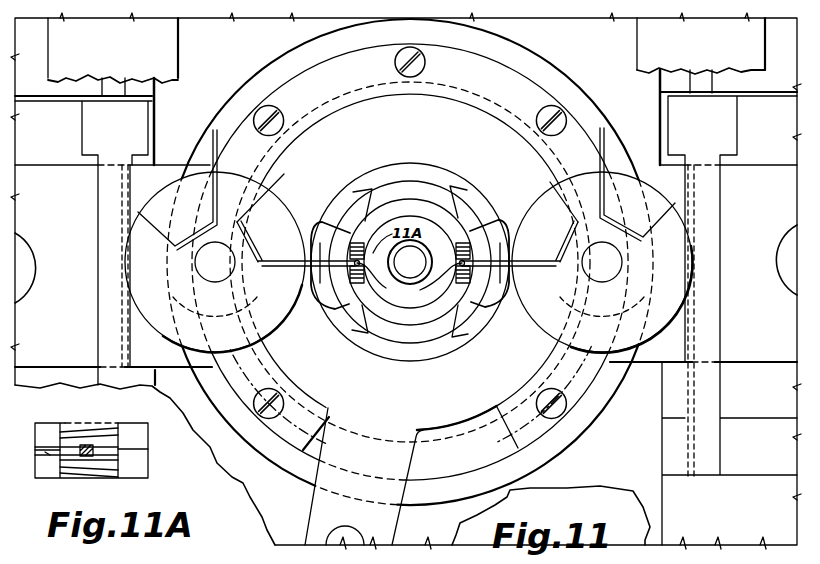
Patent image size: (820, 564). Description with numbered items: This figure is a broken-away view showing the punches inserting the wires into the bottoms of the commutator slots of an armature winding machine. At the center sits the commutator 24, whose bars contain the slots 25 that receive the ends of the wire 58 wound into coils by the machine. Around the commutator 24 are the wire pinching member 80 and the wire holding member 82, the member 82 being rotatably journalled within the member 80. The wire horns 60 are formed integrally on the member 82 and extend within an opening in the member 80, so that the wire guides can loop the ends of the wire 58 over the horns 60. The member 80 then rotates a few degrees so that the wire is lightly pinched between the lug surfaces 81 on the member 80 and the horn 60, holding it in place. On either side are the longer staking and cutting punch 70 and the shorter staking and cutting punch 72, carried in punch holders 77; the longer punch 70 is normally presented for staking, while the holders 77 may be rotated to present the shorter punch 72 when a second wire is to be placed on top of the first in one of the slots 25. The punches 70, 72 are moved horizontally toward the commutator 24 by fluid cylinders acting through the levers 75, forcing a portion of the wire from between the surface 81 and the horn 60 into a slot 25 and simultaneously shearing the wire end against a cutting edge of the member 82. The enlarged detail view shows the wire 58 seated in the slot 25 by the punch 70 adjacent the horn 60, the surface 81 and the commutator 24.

In FIG. 11, the commutator 24 is at (425, 320).
In FIG. 11A, the commutator 24 is at (110, 461).
In FIG. 11, the slots 25 is at (463, 237).
In FIG. 11A, the slots 25 is at (122, 443).
In FIG. 11, the wire 58 is at (420, 281).
In FIG. 11A, the wire 58 is at (88, 447).
In FIG. 11, the wire horns 60 is at (320, 243).
In FIG. 11A, the wire horns 60 is at (56, 426).
In FIG. 11, the longer staking and cutting punch 70 is at (292, 270).
In FIG. 11A, the longer staking and cutting punch 70 is at (43, 443).
In FIG. 11, the shorter staking and cutting punch 72 is at (217, 137).
In FIG. 11, the levers 75 is at (30, 262).
In FIG. 11, the punch holders 77 is at (548, 320).
In FIG. 11, the wire pinching member 80 is at (393, 170).
In FIG. 11, the lug surfaces 81 is at (317, 283).
In FIG. 11A, the lug surfaces 81 is at (50, 455).
In FIG. 11, the wire holding member 82 is at (425, 185).